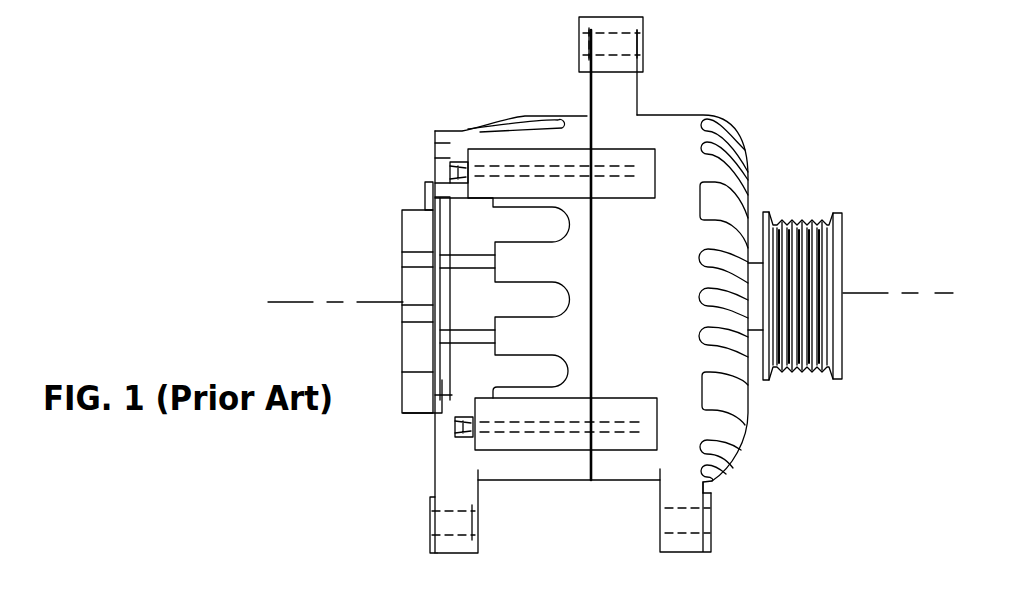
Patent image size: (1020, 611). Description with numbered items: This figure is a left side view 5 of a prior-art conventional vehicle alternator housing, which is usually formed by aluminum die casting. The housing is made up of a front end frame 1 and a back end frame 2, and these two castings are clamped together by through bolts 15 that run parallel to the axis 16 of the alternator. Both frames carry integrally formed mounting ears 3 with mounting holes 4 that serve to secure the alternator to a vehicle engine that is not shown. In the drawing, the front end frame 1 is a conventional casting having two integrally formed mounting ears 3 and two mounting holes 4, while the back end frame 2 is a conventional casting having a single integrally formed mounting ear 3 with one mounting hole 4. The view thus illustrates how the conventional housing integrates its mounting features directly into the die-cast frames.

The front end frame 1 is at (685, 172).
The back end frame 2 is at (437, 145).
The mounting ears 3 is at (598, 107).
The mounting holes 4 is at (643, 43).
The left side view 5 is at (787, 420).
The through bolts 15 is at (437, 167).
The axis 16 is at (382, 298).